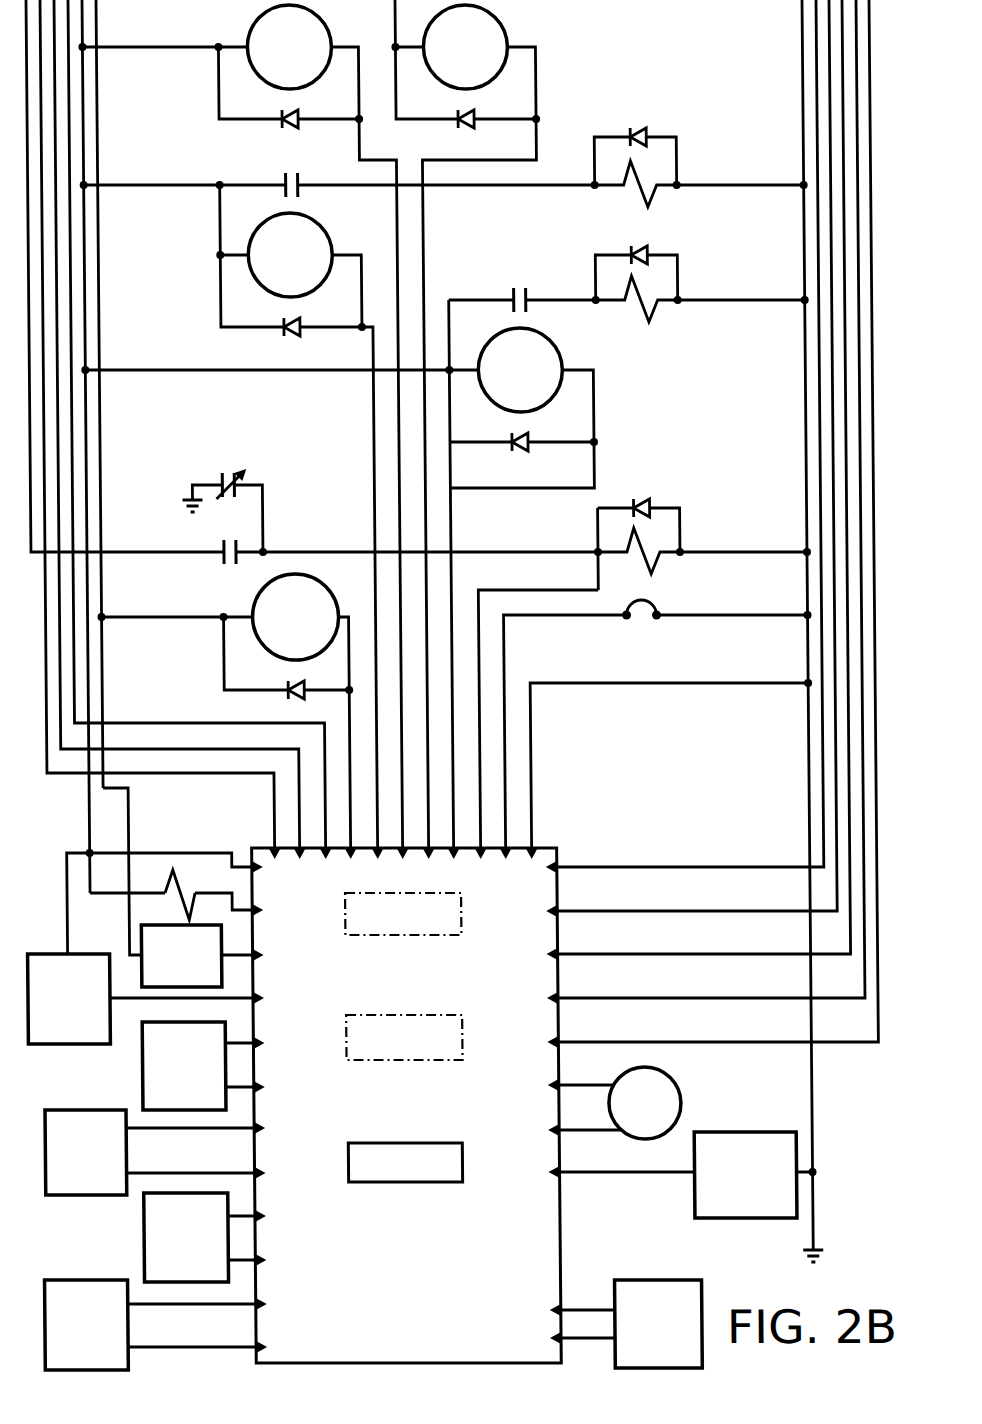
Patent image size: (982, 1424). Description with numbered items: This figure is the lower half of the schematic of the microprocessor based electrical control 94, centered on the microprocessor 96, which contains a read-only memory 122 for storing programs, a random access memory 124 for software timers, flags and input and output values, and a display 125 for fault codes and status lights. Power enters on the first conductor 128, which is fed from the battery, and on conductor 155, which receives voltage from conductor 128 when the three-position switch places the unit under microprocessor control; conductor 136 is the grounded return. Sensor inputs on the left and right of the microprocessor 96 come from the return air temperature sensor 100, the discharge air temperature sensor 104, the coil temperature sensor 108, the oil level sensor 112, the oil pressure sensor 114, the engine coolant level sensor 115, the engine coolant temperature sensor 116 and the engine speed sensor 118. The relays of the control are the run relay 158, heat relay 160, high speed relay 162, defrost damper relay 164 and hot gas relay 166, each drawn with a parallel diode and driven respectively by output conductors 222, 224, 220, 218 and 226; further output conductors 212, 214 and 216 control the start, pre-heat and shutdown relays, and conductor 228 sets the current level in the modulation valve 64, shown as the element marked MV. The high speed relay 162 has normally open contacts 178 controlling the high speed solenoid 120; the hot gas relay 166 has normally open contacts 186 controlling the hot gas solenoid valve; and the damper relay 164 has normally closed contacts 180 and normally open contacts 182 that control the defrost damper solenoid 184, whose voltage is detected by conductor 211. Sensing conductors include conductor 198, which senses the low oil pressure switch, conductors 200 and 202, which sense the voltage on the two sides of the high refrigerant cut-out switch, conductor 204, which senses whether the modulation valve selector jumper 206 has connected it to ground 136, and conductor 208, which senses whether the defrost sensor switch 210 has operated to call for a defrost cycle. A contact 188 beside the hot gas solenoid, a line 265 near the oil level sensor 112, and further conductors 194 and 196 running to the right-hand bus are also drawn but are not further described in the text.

The run relay 158 is at (372, 24).
The heat relay 160 is at (554, 31).
The high speed relay 162 is at (363, 229).
The defrost damper relay 164 is at (357, 587).
The hot gas relay 166 is at (597, 354).
The high speed solenoid 120 is at (646, 205).
The hot gas solenoid contact 188 is at (637, 291).
The defrost damper solenoid 184 is at (636, 542).
The normally open contacts 178 is at (284, 174).
The normally open contacts 186 is at (514, 285).
The normally closed contacts 180 is at (224, 472).
The normally open contacts 182 is at (219, 541).
The modulation valve selector jumper 206 is at (634, 624).
The conductor 222 is at (357, 150).
The conductor 224 is at (535, 150).
The conductor 220 is at (370, 393).
The conductor 226 is at (448, 492).
The conductor 211 is at (484, 588).
The conductor 204 is at (590, 620).
The conductor 216 is at (114, 723).
The conductor 218 is at (343, 717).
The conductor 214 is at (66, 775).
The conductor 212 is at (79, 783).
The conductor 155 is at (82, 221).
The first conductor 128 is at (96, 270).
The oil level sensor line 265 is at (246, 864).
The conductor 228 is at (248, 889).
The modulation valve 64 is at (160, 888).
The defrost sensor switch 210 is at (132, 955).
The conductor 208 is at (250, 948).
The oil level sensor 112 is at (72, 1046).
The return air temperature sensor 100 is at (133, 1056).
The microprocessor based electrical control 94 is at (149, 1172).
The discharge air temperature sensor 104 is at (56, 1196).
The coil temperature sensor 108 is at (132, 1226).
The engine coolant temperature sensor 116 is at (74, 1280).
The engine speed sensor 118 is at (671, 1102).
The oil pressure sensor 114 is at (684, 1198).
The engine coolant level sensor 115 is at (665, 1280).
The conductor 136 is at (804, 1148).
The microprocessor 96 is at (437, 1105).
The read-only memory (ROM) 122 is at (454, 905).
The random access memory (RAM) 124 is at (454, 1036).
The display 125 is at (452, 1162).
The conductor 202 is at (782, 870).
The conductor 200 is at (786, 913).
The conductor 198 is at (794, 955).
The output line 196 is at (790, 1000).
The output line 194 is at (814, 1046).